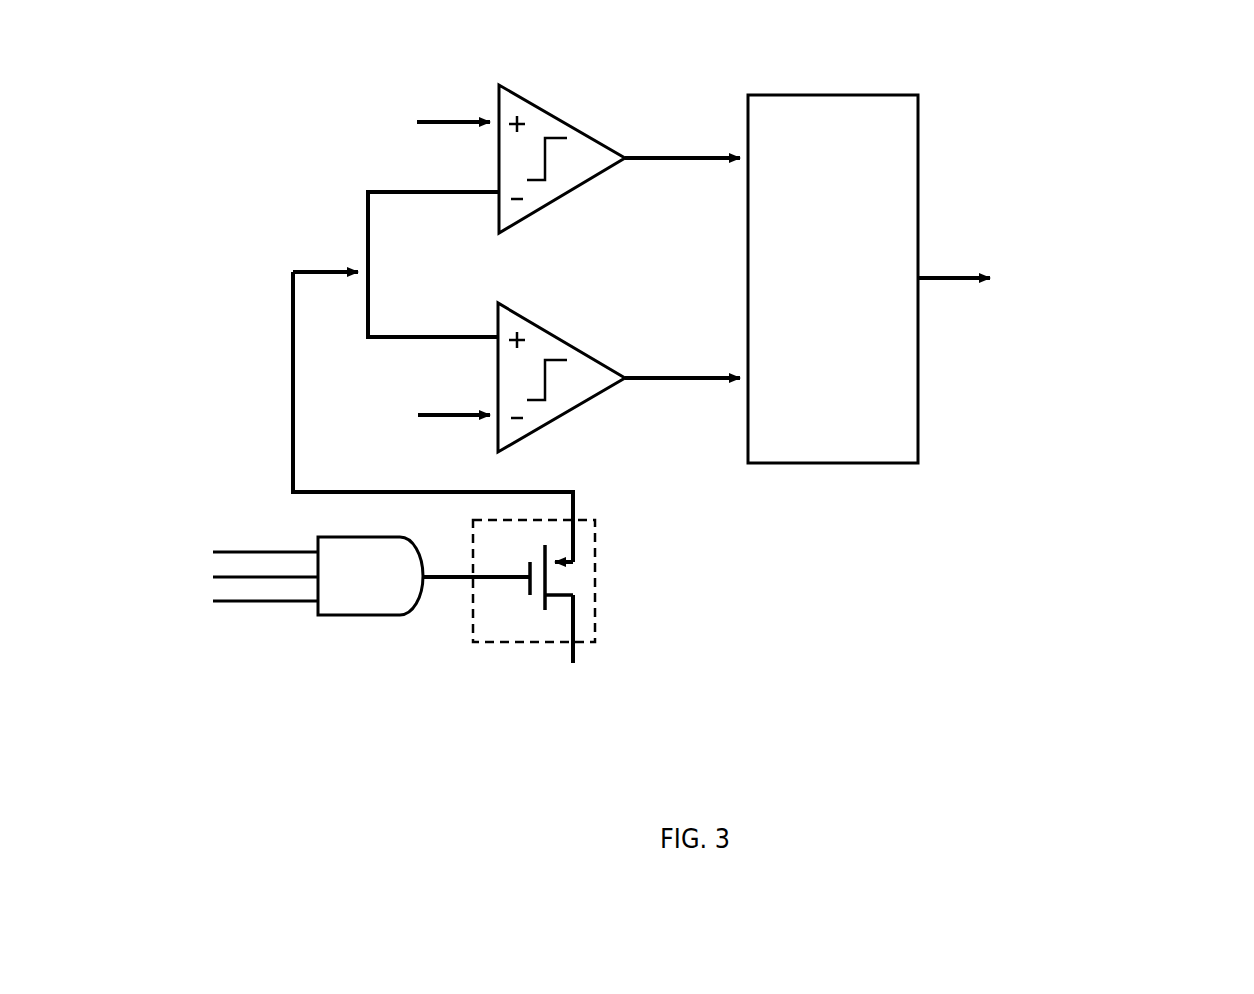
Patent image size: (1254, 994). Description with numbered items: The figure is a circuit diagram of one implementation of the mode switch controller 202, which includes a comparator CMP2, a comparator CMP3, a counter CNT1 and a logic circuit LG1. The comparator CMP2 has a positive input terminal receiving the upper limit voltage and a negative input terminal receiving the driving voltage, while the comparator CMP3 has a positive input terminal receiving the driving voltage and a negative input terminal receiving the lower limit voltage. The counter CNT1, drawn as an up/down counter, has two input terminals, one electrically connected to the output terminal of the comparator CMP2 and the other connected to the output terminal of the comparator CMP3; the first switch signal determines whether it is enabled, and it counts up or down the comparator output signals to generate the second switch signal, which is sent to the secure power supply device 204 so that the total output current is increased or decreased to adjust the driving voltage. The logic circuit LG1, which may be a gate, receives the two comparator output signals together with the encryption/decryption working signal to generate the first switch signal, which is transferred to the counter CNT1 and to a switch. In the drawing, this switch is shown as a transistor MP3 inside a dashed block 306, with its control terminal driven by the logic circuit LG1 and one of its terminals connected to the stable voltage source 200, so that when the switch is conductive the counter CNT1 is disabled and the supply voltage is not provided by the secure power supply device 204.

The mode switch controller 202 is at (268, 50).
The comparator CMP2 is at (530, 103).
The comparator CMP3 is at (534, 331).
The counter CNT1 is at (773, 92).
The logic circuit LG1 is at (370, 539).
The PMOS transistor MP3 is at (542, 606).
The switch circuit 306 is at (582, 512).
The secure power supply device 204 is at (1071, 278).
The stable voltage source 200 is at (574, 668).